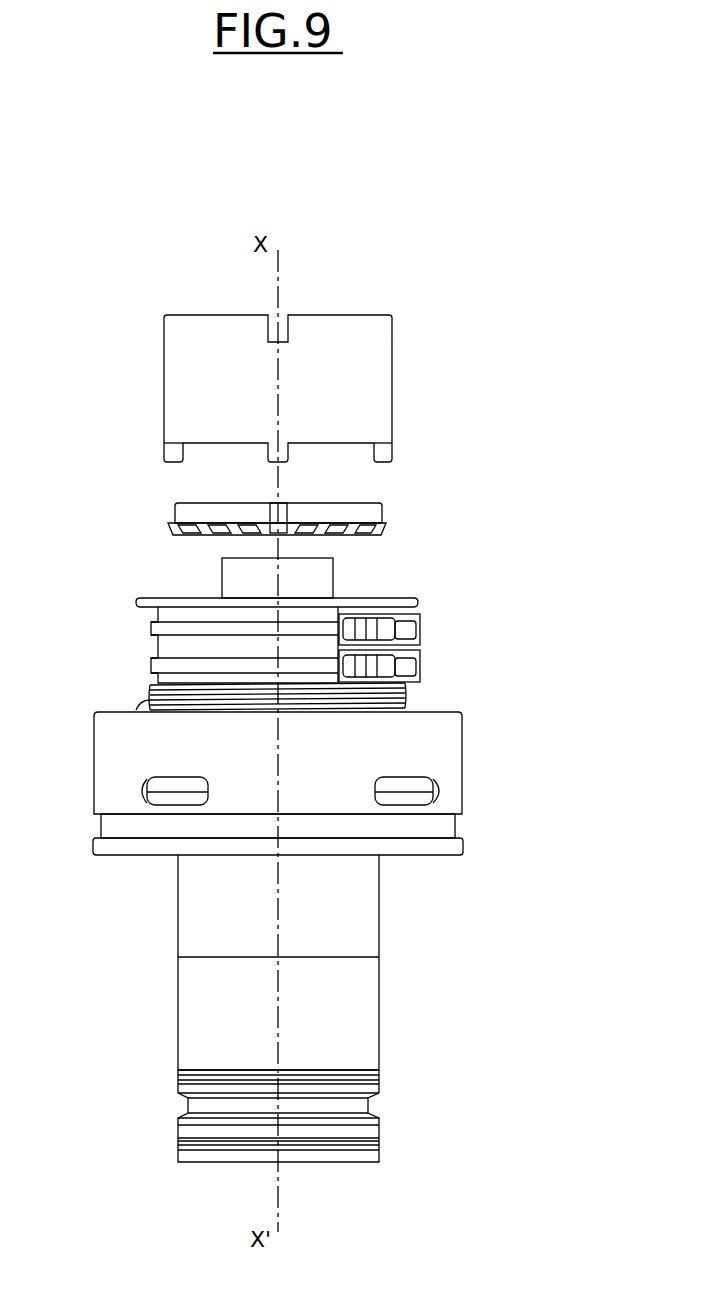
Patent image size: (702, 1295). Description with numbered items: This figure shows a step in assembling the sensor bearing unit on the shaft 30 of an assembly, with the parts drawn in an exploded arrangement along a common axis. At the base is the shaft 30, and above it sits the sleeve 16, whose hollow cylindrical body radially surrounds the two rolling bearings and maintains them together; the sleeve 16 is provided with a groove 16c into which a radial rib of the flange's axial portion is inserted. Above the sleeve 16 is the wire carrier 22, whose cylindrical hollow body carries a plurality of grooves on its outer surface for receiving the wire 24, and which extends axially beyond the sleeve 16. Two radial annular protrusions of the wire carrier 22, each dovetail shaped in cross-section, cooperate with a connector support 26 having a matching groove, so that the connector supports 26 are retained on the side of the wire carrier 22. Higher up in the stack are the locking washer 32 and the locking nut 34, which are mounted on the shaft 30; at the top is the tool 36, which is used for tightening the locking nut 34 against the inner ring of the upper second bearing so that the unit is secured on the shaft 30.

The tool 36 is at (170, 382).
The locking nut 34 is at (380, 518).
The locking washer 32 is at (172, 528).
The wire carrier 22 is at (142, 627).
The connector support 26 is at (422, 629).
The wire 24 is at (407, 687).
The sleeve 16 is at (464, 762).
The groove 16c is at (441, 845).
The shaft 30 is at (369, 1023).